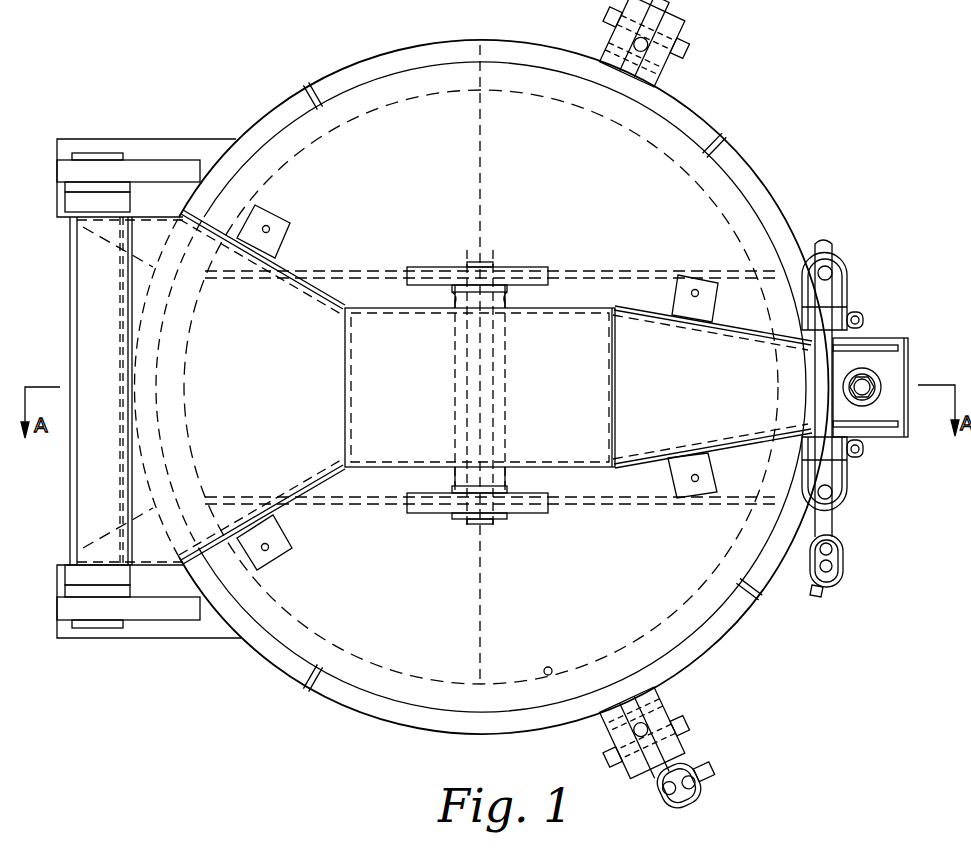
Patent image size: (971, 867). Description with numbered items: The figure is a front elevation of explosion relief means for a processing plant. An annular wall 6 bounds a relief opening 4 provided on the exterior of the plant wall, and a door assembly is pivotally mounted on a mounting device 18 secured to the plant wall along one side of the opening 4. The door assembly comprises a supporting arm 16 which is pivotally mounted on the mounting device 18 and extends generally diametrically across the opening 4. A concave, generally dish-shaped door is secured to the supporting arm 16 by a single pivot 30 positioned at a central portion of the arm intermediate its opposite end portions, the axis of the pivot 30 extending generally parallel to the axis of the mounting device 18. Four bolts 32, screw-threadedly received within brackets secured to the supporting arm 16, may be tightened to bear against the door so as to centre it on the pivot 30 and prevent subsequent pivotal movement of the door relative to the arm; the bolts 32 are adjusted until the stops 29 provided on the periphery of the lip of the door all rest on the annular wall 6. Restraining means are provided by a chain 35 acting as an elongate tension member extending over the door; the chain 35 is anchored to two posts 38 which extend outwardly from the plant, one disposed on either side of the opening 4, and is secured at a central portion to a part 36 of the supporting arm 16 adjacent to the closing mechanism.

The relief opening 4 is at (553, 676).
The annular wall 6 is at (400, 708).
The supporting arm 16 is at (633, 326).
The mounting device 18 is at (100, 628).
The stops 29 is at (313, 84).
The pivot 30 is at (490, 518).
The bolts 32 is at (270, 229).
The chain 35 is at (846, 576).
The part of the supporting arm 36 is at (880, 428).
The posts 38 is at (682, 28).